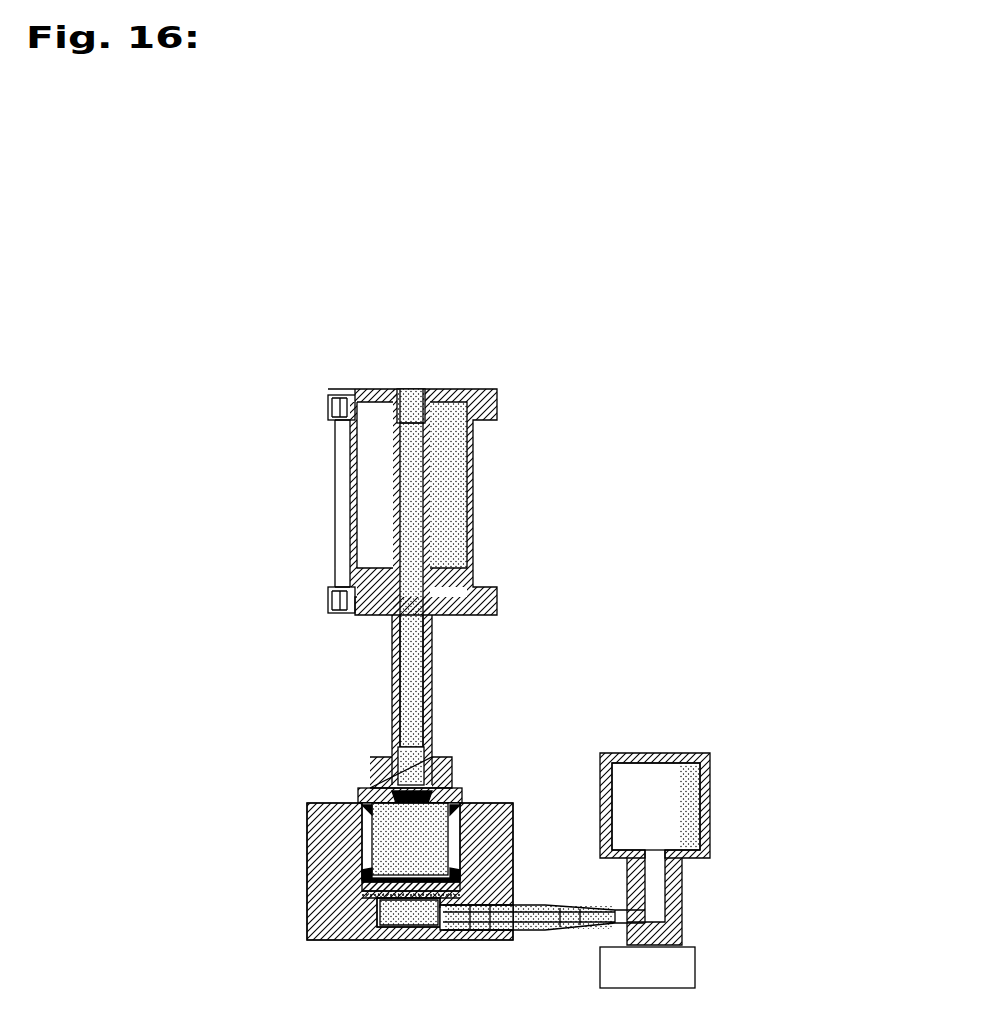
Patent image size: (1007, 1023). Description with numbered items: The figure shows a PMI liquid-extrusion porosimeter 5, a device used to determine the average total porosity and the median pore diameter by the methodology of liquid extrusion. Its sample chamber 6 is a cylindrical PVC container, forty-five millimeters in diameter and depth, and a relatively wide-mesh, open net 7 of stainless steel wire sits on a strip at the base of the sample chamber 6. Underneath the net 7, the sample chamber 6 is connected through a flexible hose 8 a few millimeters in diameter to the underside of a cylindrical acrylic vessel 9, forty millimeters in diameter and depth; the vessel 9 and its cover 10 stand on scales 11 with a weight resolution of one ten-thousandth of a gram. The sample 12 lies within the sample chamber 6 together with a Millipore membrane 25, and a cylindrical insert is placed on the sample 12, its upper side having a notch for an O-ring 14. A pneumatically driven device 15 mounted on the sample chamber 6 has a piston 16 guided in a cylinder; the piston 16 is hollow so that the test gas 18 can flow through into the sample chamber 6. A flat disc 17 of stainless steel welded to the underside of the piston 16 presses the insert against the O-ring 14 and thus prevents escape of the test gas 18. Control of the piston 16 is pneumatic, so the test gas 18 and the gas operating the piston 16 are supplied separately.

The liquid-extrusion porosimeter 5 is at (731, 356).
The sample chamber 6 is at (307, 815).
The net 7 is at (362, 903).
The flexible hose 8 is at (545, 940).
The acrylic vessel 9 is at (600, 791).
The cover 10 is at (600, 755).
The scales 11 is at (647, 967).
The sample 12 is at (360, 889).
The O-ring 14 is at (367, 877).
The pneumatically driven device 15 is at (478, 505).
The piston 16 is at (390, 690).
The flat disc 17 is at (398, 798).
The test gas 18 is at (414, 383).
The Millipore membrane 25 is at (363, 895).